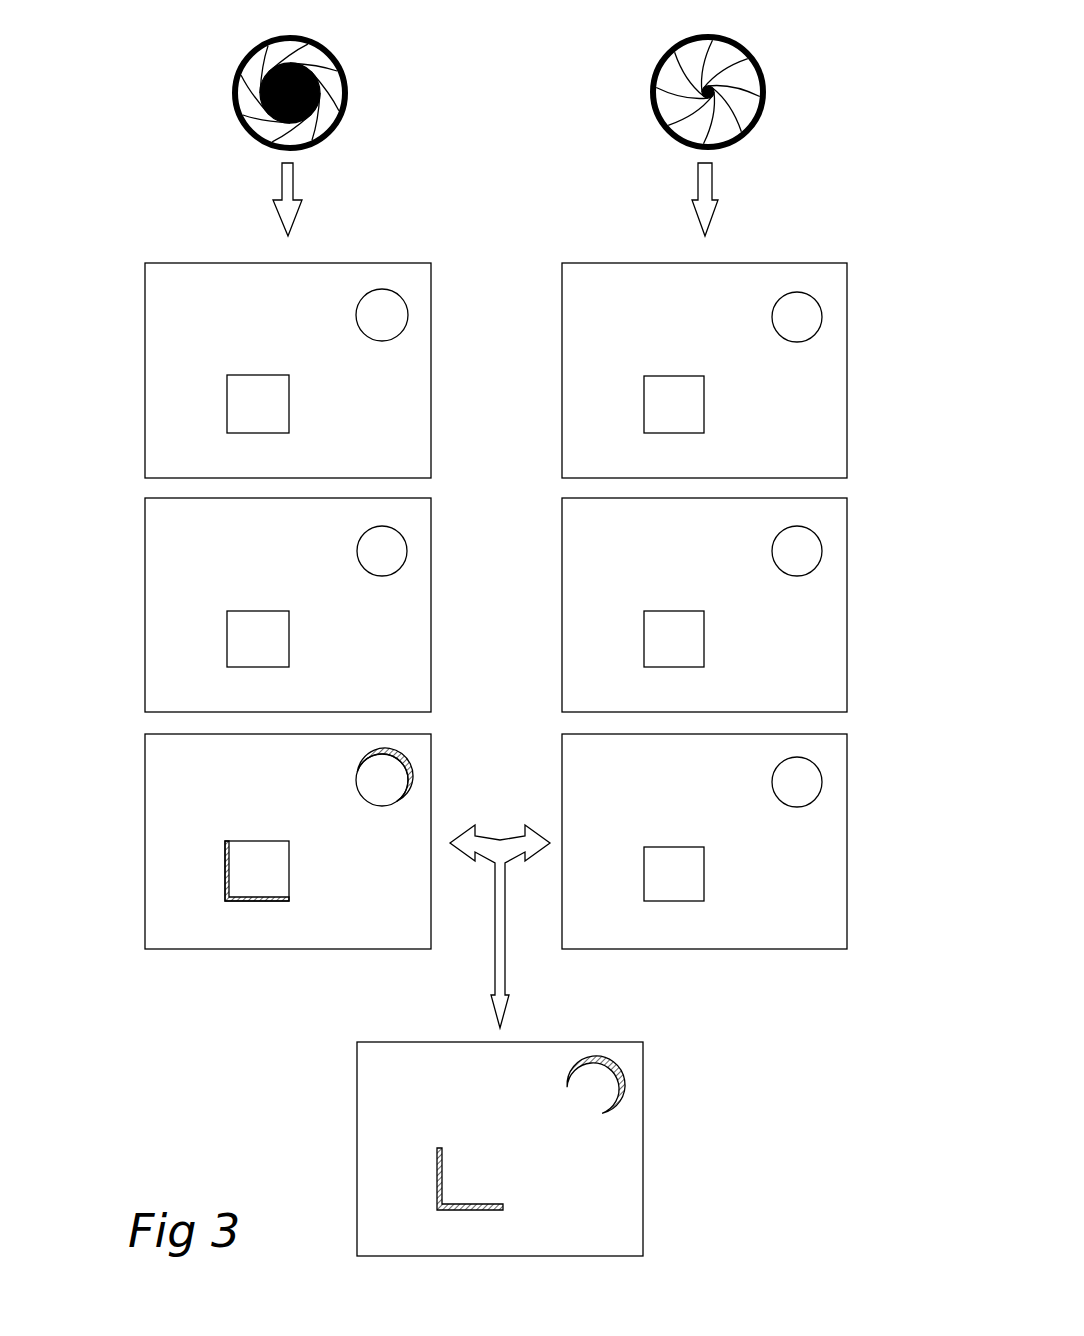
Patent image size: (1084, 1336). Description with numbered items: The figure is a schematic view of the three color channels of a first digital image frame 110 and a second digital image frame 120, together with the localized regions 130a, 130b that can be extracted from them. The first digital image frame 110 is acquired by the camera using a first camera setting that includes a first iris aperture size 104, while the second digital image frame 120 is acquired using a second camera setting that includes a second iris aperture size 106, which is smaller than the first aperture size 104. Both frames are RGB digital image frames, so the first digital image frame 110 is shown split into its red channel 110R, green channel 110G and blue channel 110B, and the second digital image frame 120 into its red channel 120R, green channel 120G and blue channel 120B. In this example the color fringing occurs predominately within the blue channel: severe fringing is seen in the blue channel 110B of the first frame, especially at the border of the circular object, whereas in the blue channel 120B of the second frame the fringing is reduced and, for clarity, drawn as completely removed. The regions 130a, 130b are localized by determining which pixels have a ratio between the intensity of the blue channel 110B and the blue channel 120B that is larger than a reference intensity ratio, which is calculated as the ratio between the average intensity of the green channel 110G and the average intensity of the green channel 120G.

The first iris aperture size 104 is at (364, 61).
The second iris aperture size 106 is at (784, 61).
The first digital image frame 110 is at (436, 222).
The red channel of the first digital image frame 110R is at (145, 348).
The green channel of the first digital image frame 110G is at (145, 584).
The blue channel of the first digital image frame 110B is at (145, 820).
The second digital image frame 120 is at (858, 222).
The red channel of the second digital image frame 120R is at (848, 348).
The green channel of the second digital image frame 120G is at (848, 582).
The blue channel of the second digital image frame 120B is at (848, 818).
The localized region 130a is at (437, 1198).
The localized region 130b is at (623, 1075).